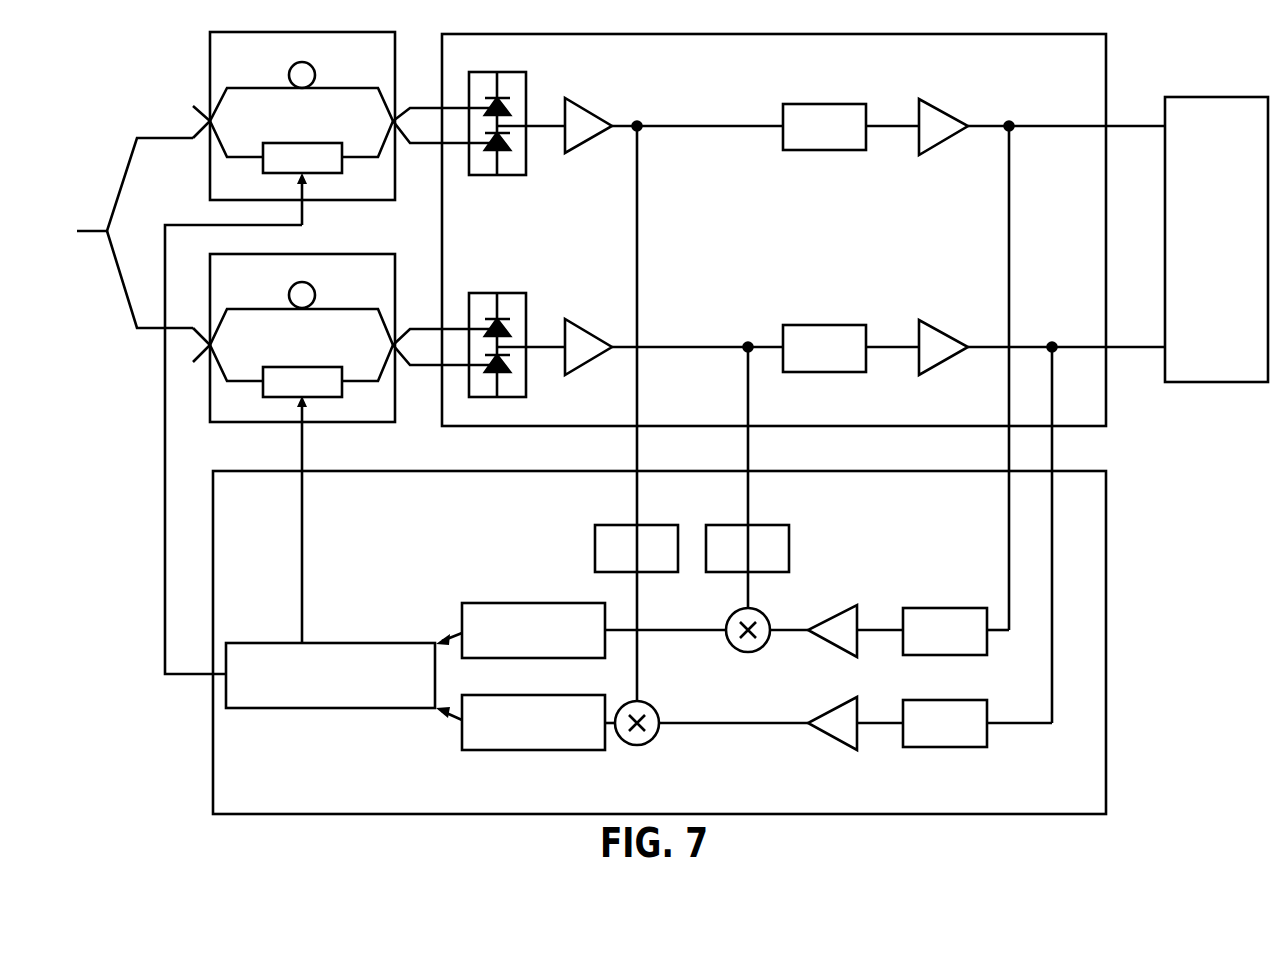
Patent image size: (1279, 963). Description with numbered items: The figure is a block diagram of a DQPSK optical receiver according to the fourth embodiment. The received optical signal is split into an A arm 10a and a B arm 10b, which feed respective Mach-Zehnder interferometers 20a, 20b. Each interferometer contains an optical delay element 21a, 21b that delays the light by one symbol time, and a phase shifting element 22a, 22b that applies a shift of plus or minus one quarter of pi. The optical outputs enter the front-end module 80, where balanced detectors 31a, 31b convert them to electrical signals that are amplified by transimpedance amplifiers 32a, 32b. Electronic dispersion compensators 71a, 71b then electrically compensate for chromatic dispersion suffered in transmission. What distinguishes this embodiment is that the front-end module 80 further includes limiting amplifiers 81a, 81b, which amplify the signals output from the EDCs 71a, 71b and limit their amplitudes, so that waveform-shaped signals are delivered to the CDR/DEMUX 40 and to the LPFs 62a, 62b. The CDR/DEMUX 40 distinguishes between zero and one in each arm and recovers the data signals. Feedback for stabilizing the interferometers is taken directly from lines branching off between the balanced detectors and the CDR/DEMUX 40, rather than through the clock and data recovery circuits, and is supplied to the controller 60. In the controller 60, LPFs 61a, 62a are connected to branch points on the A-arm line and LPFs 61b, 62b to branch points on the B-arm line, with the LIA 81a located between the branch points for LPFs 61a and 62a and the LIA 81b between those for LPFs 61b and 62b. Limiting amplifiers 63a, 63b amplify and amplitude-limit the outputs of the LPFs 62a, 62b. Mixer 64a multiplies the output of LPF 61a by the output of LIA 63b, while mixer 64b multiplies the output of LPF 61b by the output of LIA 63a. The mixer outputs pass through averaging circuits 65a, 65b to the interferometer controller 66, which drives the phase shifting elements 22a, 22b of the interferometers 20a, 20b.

The A arm 10a is at (144, 110).
The B arm 10b is at (144, 356).
The Mach-Zehnder interferometer 20a is at (345, 114).
The Mach-Zehnder interferometer 20b is at (345, 448).
The optical delay element 21a is at (304, 62).
The optical delay element 21b is at (304, 282).
The phase shifting element 22a is at (276, 143).
The phase shifting element 22b is at (276, 367).
The balanced detector 31a is at (480, 72).
The balanced detector 31b is at (480, 293).
The transimpedance amplifier 32a is at (588, 98).
The transimpedance amplifier 32b is at (588, 320).
The CDR/DEMUX 40 is at (1183, 97).
The controller 60 is at (401, 471).
The low pass filter 61a is at (658, 525).
The low pass filter 61b is at (768, 525).
The low pass filter 62a is at (912, 608).
The low pass filter 62b is at (912, 700).
The limiting amplifier 63a is at (841, 605).
The limiting amplifier 63b is at (841, 752).
The mixer 64a is at (655, 706).
The mixer 64b is at (766, 613).
The averaging circuit 65a is at (500, 603).
The averaging circuit 65b is at (500, 695).
The interferometer controller 66 is at (332, 643).
The electronic dispersion compensator 71a is at (802, 104).
The electronic dispersion compensator 71b is at (802, 325).
The front-end module 80 is at (478, 34).
The limiting amplifier 81a is at (942, 105).
The limiting amplifier 81b is at (942, 322).